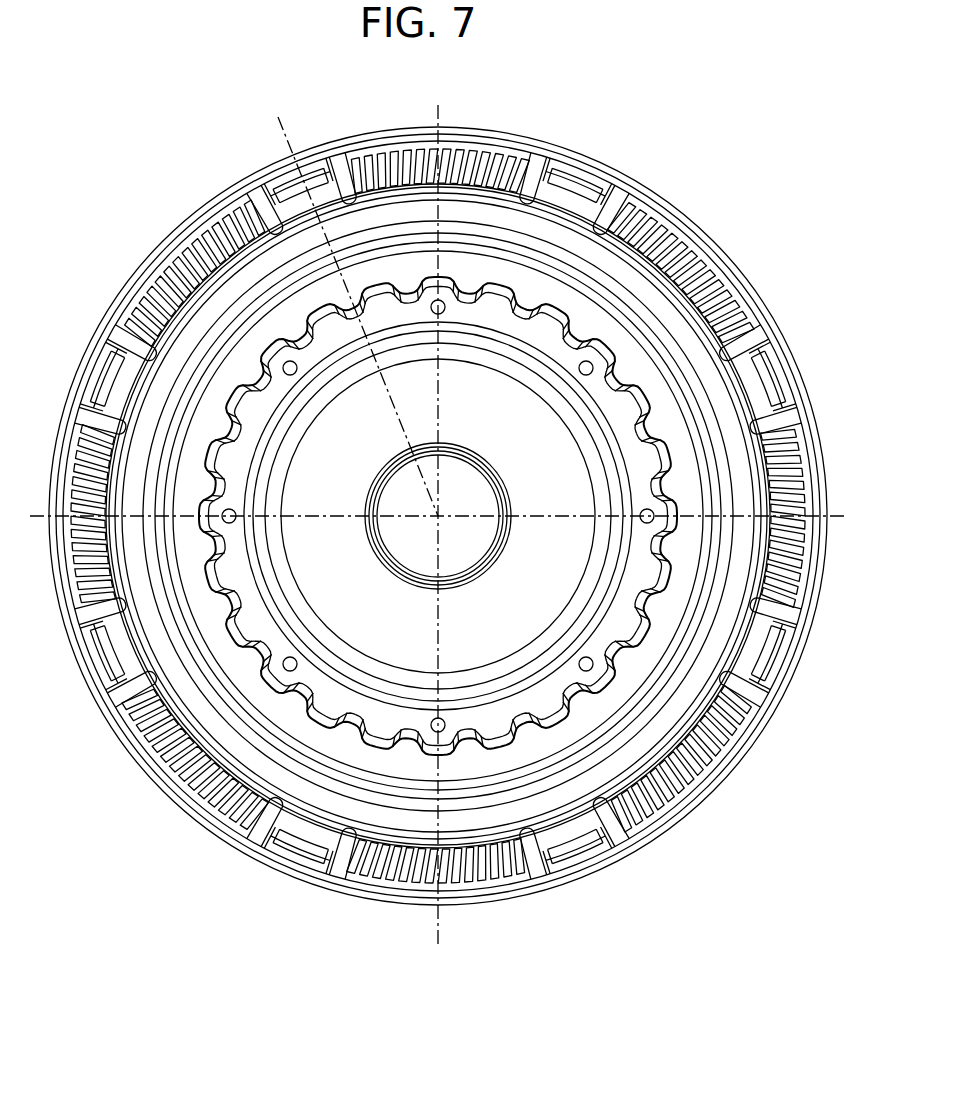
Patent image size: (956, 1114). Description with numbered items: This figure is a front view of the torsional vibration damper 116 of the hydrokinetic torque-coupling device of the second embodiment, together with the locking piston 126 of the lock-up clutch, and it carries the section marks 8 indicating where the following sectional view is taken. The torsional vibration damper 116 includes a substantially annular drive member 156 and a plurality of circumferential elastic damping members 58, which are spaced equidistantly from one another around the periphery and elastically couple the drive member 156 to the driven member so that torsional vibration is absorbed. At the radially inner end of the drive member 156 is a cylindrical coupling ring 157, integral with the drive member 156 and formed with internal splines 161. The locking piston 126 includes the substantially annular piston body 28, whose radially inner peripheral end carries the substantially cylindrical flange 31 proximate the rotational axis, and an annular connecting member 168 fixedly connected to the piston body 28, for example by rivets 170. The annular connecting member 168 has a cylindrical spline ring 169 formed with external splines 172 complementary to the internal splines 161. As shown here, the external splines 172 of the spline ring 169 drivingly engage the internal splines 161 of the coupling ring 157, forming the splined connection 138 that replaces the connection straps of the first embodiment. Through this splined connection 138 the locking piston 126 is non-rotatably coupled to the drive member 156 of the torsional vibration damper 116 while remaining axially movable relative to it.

The section line 8- 8 is at (281, 117).
The piston body 28 is at (525, 574).
The cylindrical flange 31 is at (493, 478).
The elastic damping members 58 is at (130, 336).
The torsional vibration damper 116 is at (513, 129).
The locking piston 126 is at (503, 624).
The splined connection 138 is at (235, 646).
The drive member 156 is at (667, 192).
The coupling ring 157 is at (606, 344).
The internal splines 161 is at (256, 377).
The annular connecting member 168 is at (335, 697).
The cylindrical spline ring 169 is at (283, 645).
The rivets 170 is at (583, 372).
The external splines 172 is at (258, 403).